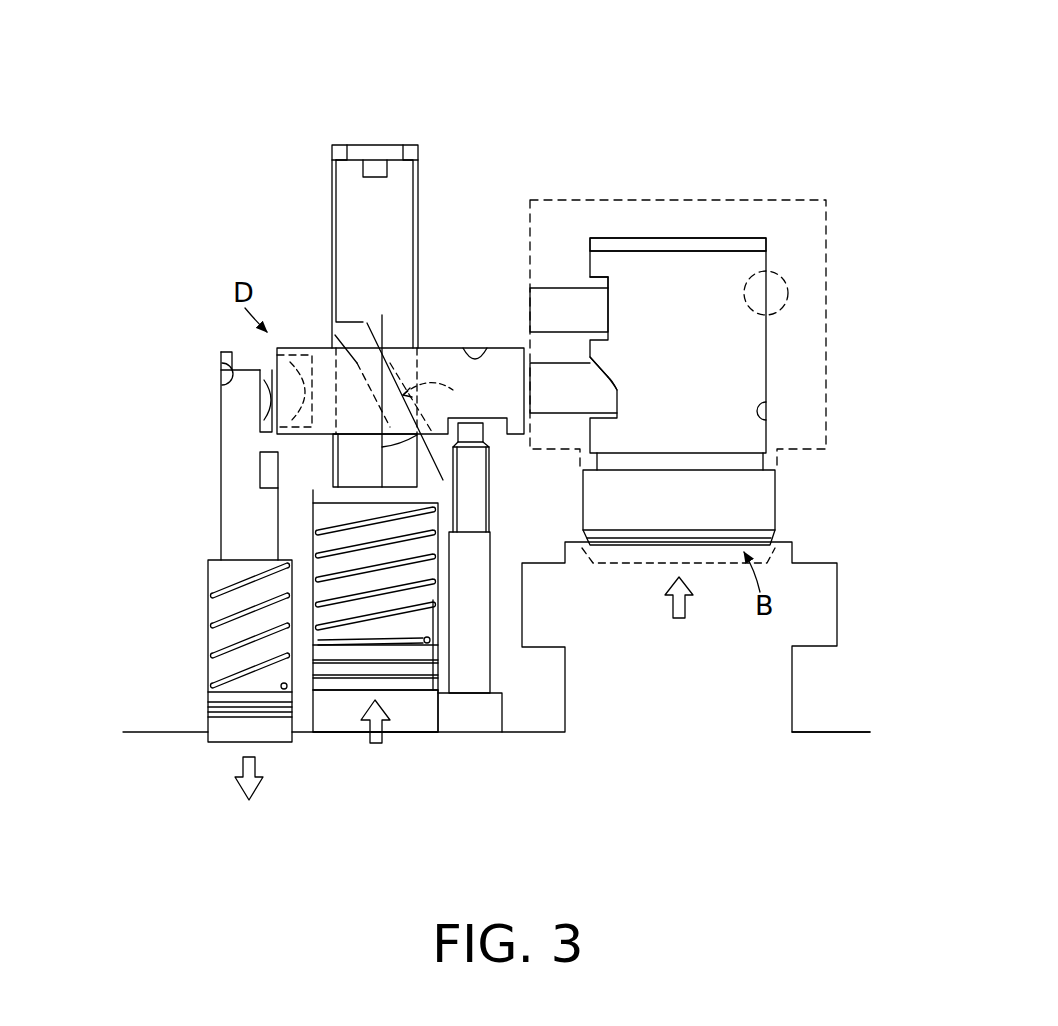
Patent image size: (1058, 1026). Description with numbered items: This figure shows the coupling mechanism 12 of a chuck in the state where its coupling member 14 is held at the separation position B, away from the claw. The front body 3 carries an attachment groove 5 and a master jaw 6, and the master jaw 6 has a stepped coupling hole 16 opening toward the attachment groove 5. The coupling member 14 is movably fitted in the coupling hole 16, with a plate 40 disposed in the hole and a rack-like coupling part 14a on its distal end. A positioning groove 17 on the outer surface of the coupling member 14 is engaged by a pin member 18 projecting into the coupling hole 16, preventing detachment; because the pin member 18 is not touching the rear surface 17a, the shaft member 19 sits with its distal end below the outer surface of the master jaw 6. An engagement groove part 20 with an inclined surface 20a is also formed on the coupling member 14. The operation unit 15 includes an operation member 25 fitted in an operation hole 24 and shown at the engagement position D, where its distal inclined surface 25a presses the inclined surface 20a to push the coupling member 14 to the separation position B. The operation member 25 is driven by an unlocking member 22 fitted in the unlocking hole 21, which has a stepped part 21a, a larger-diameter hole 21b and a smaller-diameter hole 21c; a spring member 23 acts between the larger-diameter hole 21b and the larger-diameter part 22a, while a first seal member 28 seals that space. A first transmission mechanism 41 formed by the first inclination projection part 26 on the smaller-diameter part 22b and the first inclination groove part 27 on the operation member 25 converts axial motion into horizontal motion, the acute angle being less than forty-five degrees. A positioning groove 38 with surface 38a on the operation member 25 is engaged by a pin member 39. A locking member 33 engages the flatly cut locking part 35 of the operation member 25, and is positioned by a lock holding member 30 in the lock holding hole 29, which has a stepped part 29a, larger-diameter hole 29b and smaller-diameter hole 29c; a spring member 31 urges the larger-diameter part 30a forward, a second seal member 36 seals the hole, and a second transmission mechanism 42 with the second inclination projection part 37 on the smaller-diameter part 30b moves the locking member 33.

The front body 3 is at (845, 733).
The attachment groove 5 is at (569, 737).
The master jaw 6 is at (718, 200).
The coupling mechanism 12 is at (573, 77).
The coupling member 14 is at (768, 362).
The coupling part 14a is at (615, 539).
The operation unit 15 is at (249, 188).
The coupling hole 16 is at (775, 418).
The positioning groove 17 is at (581, 278).
The rear surface 17a is at (612, 287).
The pin member 18 is at (540, 288).
The shaft member 19 is at (785, 293).
The engagement groove part 20 is at (580, 417).
The inclined surface 20a is at (615, 388).
The unlocking hole 21 is at (448, 557).
The stepped part 21a is at (314, 490).
The larger-diameter hole 21b is at (430, 612).
The smaller-diameter hole 21c is at (347, 145).
The unlocking member 22 is at (329, 238).
The larger-diameter part 22a is at (428, 690).
The smaller-diameter part 22b is at (415, 147).
The spring member 23 is at (411, 632).
The operation hole 24 is at (482, 348).
The operation member 25 is at (438, 348).
The distal inclined surface 25a is at (604, 364).
The first inclination projection part 26 is at (368, 322).
The first inclination groove part 27 is at (444, 400).
The first seal member 28 is at (334, 676).
The lock holding hole 29 is at (206, 624).
The stepped part 29a is at (214, 566).
The larger-diameter hole 29b is at (212, 669).
The smaller-diameter hole 29c is at (220, 376).
The lock holding member 30 is at (217, 503).
The larger-diameter part 30a is at (215, 727).
The smaller-diameter part 30b is at (225, 458).
The spring member 31 is at (218, 650).
The locking member 33 is at (270, 370).
The locking part 35 is at (292, 355).
The second seal member 36 is at (223, 712).
The second inclination projection part 37 is at (263, 422).
The positioning groove 38 is at (501, 440).
The surface 38a is at (497, 418).
The pin member 39 is at (475, 603).
The plate 40 is at (740, 237).
The first transmission mechanism 41 is at (353, 314).
The second transmission mechanism 42 is at (254, 403).